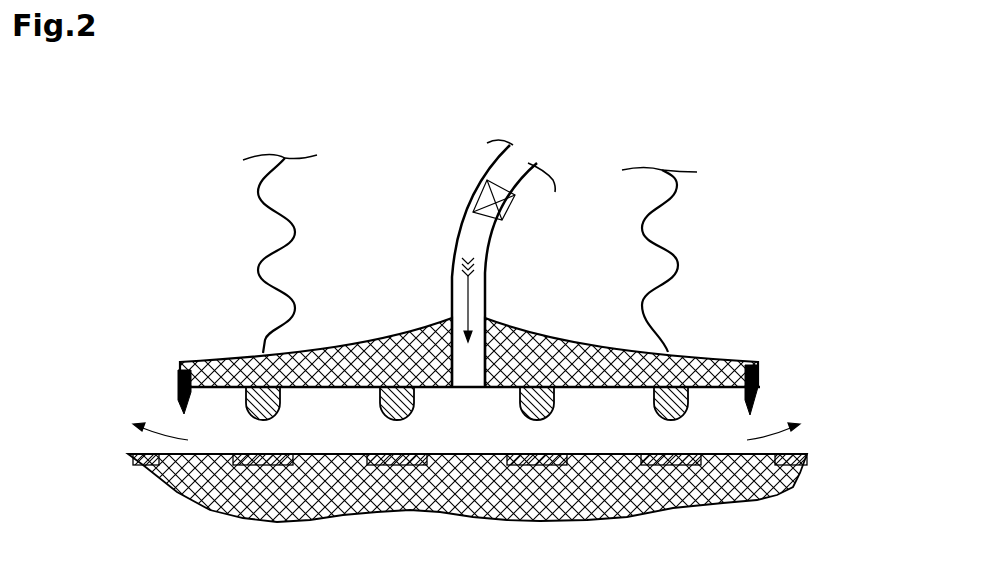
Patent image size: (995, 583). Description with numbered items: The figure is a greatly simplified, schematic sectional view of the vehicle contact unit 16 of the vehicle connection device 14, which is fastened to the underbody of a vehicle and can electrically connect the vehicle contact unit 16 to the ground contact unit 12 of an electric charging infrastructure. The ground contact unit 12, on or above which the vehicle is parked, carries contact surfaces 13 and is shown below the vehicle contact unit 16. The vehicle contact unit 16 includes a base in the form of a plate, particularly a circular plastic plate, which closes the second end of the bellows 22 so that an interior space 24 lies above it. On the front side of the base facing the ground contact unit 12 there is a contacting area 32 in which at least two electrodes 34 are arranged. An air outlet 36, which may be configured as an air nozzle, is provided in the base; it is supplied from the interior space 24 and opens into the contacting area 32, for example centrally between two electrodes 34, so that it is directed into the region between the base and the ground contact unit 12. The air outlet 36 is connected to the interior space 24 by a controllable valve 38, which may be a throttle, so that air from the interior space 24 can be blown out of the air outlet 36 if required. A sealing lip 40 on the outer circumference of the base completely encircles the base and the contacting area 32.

The ground contact unit 12 is at (142, 538).
The contact surfaces 13 is at (470, 515).
The vehicle connection device 14 is at (423, 366).
The vehicle contact unit 16 is at (202, 253).
The bellows 22 is at (734, 260).
The interior space 24 is at (360, 246).
The contacting area 32 is at (467, 500).
The electrodes 34 is at (467, 481).
The air outlet 36 is at (524, 474).
The controllable valve 38 is at (321, 238).
The sealing lip 40 is at (795, 373).